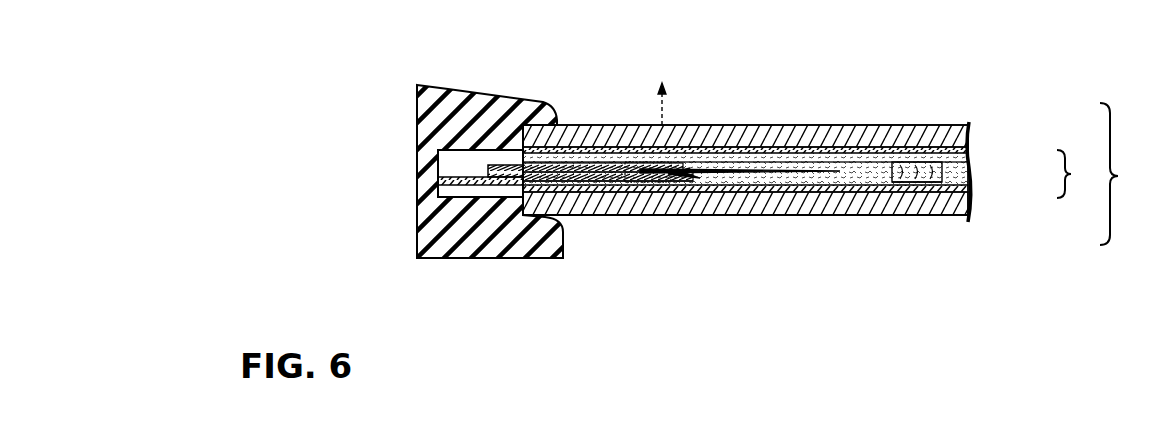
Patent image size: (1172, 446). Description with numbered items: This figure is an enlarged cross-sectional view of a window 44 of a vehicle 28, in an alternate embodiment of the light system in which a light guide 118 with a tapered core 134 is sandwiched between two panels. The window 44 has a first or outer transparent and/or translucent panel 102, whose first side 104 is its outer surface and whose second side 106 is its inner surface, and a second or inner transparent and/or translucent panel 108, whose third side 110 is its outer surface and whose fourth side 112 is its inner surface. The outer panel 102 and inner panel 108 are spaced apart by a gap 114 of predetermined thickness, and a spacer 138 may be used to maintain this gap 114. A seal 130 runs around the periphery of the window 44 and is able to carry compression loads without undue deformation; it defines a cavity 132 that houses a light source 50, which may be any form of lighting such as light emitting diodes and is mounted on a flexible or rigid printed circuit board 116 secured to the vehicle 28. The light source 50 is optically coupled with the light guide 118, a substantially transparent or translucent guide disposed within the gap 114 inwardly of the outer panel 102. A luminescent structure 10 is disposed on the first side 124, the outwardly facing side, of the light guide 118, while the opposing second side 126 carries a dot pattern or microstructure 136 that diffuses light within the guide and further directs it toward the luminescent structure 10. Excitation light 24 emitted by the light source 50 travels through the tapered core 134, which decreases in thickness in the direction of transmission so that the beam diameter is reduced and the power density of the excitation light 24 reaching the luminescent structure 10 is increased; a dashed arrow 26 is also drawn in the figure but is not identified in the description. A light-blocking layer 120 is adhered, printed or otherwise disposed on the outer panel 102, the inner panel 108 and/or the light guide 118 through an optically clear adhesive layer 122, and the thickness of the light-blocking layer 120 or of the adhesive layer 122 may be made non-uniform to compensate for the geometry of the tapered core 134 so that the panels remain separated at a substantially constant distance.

The seal 130 is at (433, 112).
The cavity 132 is at (460, 163).
The printed circuit board 116 is at (474, 177).
The light source 50 is at (498, 165).
The luminescent structure 10 is at (678, 125).
The first side 104 is at (866, 125).
The light-blocking layer 120 is at (968, 149).
The second side 106 is at (825, 155).
The third side 110 is at (803, 215).
The inner panel 108 is at (968, 215).
The fourth side 112 is at (852, 195).
The first side of the light guide 124 is at (583, 163).
The light guide 118 is at (603, 163).
The second side of the light guide 126 is at (585, 192).
The microstructure 136 is at (655, 182).
The tapered core 134 is at (706, 182).
The excitation light 24 is at (572, 215).
The direction arrow 26 is at (663, 103).
The adhesive layer 122 is at (968, 168).
The spacer 138 is at (913, 182).
The outer panel 102 is at (968, 127).
The gap 114 is at (1085, 174).
The window 44 is at (1125, 174).
The vehicle 28 is at (921, 73).